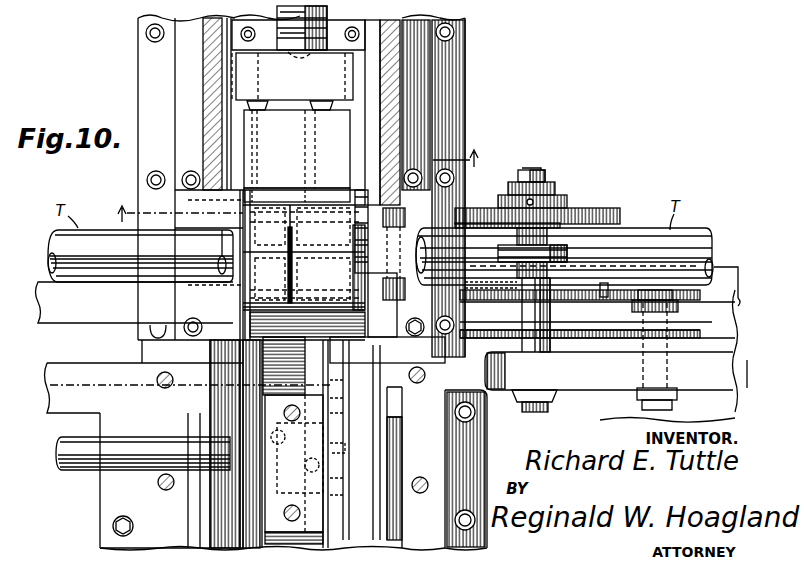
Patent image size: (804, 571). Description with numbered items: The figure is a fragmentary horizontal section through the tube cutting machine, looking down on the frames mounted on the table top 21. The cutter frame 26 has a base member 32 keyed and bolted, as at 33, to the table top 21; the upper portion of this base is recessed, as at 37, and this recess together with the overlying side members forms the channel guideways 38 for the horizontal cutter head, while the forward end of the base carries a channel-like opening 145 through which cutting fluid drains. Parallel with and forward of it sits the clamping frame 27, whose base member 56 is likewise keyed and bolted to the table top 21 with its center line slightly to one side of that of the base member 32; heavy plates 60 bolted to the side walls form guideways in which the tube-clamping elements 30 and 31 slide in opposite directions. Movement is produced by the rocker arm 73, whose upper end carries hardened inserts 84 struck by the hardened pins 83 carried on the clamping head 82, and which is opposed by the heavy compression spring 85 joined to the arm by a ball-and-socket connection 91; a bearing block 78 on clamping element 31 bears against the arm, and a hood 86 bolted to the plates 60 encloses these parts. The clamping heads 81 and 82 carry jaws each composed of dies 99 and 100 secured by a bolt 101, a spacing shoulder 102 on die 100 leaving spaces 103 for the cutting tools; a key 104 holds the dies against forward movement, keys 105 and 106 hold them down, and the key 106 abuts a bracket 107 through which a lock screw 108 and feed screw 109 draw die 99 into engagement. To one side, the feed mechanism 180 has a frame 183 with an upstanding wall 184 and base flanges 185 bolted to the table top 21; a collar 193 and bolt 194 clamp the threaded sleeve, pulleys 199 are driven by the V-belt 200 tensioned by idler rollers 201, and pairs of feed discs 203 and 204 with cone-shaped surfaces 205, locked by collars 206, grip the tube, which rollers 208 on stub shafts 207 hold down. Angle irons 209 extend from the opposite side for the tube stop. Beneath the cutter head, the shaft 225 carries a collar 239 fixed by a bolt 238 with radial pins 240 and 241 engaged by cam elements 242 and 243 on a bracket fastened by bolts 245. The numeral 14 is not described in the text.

The frame 14 is at (171, 5).
The table top 21 is at (565, 22).
The cutter frame 26 is at (135, 494).
The clamping frame 27 is at (182, 92).
The tube-clamping element 30 is at (332, 335).
The tube-clamping element 31 is at (397, 158).
The base member 32 is at (138, 546).
The bolts 33 is at (112, 522).
The recess 37 is at (255, 522).
The channel guideways 38 is at (226, 528).
The base member 56 is at (140, 112).
The heavy plate 60 is at (190, 222).
The rocker arm 73 is at (242, 85).
The bearing block 78 is at (363, 19).
The clamping head 81 is at (255, 317).
The clamping head 82 is at (273, 133).
The hardened pins 83 is at (263, 188).
The hardened inserts 84 is at (310, 100).
The compression spiral spring 85 is at (313, 21).
The hood 86 is at (212, 62).
The ball-and-socket connection 91 is at (312, 52).
The die 99 is at (252, 275).
The die 100 is at (345, 245).
The bolt 101 is at (287, 288).
The spacing shoulder 102 is at (302, 225).
The spaces 103 is at (289, 232).
The key 104 is at (240, 222).
The key 105 is at (245, 298).
The key 106 is at (296, 262).
The bracket 107 is at (372, 165).
The lock screw 108 is at (396, 210).
The feed screw 109 is at (345, 262).
The channel-like opening 145 is at (340, 385).
The feed mechanism 180 is at (720, 397).
The frame 183 is at (740, 298).
The upstanding wall 184 is at (577, 378).
The base flanges 185 is at (722, 265).
The collar 193 is at (505, 172).
The bolt 194 is at (543, 170).
The pulleys 199 is at (605, 338).
The V-belt 200 is at (703, 322).
The idler rollers 201 is at (678, 312).
The feed disc 203 is at (608, 290).
The feed disc 204 is at (573, 203).
The cone-shaped surfaces 205 is at (612, 222).
The collars 206 is at (560, 190).
The stub shafts 207 is at (528, 323).
The rollers 208 is at (573, 250).
The angle irons 209 is at (82, 320).
The shaft 225 is at (78, 440).
The bolt 238 is at (340, 446).
The collar 239 is at (340, 496).
The radial pin 240 is at (273, 433).
The radial pin 241 is at (340, 479).
The cam element 242 is at (327, 490).
The cam element 243 is at (340, 399).
The bolts 245 is at (340, 414).